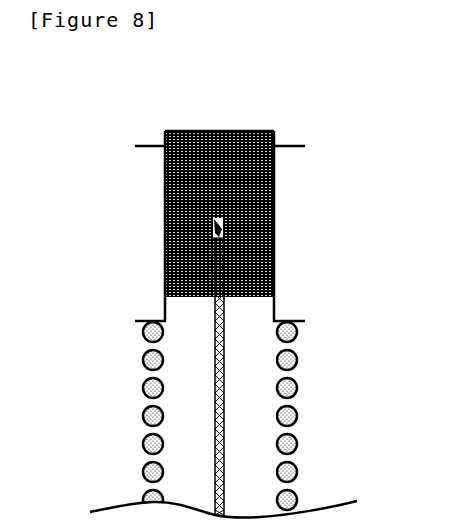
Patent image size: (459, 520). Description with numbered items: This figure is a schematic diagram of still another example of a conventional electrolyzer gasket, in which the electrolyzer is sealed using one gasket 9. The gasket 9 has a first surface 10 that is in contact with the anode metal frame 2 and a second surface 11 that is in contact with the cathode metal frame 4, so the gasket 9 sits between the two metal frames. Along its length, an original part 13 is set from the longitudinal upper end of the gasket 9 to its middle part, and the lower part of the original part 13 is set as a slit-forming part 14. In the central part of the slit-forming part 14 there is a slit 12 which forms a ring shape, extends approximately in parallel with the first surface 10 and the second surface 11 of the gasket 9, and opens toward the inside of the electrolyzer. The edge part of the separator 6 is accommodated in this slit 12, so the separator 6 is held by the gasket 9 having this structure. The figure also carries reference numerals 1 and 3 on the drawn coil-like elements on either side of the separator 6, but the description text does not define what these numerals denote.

The left coil wire 1 is at (145, 445).
The anode metal frame 2 is at (148, 265).
The right coil wire 3 is at (290, 415).
The cathode metal frame 4 is at (297, 232).
The separator 6 is at (223, 467).
The gasket 9 is at (233, 121).
The first surface 10 is at (165, 142).
The second surface 11 is at (274, 141).
The slit 12 is at (213, 220).
The original part 13 is at (268, 187).
The slit-forming part 14 is at (262, 270).